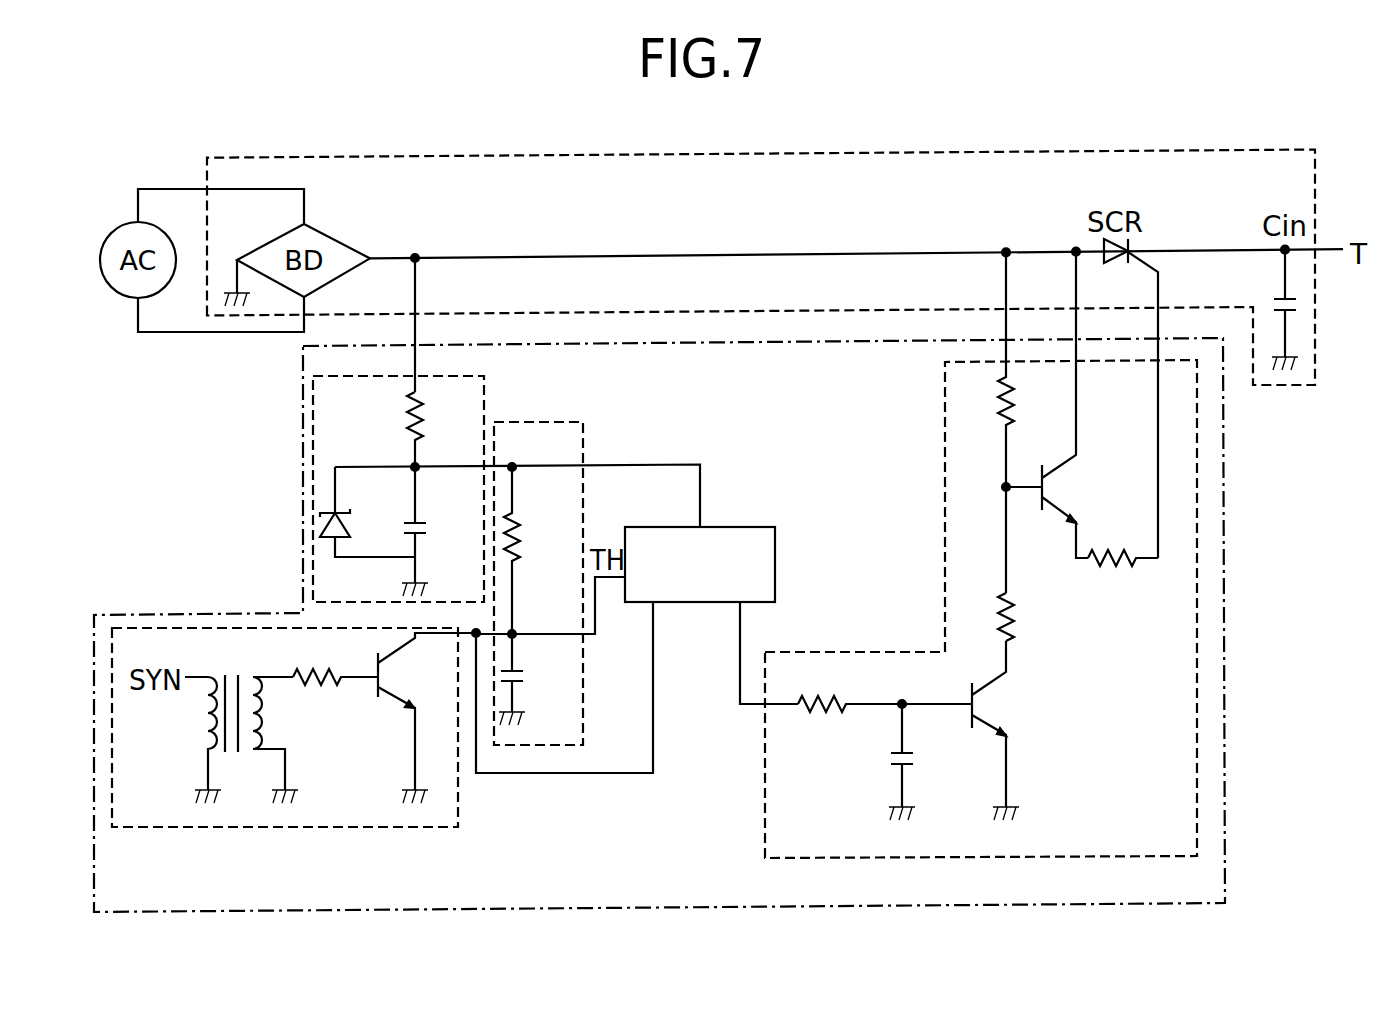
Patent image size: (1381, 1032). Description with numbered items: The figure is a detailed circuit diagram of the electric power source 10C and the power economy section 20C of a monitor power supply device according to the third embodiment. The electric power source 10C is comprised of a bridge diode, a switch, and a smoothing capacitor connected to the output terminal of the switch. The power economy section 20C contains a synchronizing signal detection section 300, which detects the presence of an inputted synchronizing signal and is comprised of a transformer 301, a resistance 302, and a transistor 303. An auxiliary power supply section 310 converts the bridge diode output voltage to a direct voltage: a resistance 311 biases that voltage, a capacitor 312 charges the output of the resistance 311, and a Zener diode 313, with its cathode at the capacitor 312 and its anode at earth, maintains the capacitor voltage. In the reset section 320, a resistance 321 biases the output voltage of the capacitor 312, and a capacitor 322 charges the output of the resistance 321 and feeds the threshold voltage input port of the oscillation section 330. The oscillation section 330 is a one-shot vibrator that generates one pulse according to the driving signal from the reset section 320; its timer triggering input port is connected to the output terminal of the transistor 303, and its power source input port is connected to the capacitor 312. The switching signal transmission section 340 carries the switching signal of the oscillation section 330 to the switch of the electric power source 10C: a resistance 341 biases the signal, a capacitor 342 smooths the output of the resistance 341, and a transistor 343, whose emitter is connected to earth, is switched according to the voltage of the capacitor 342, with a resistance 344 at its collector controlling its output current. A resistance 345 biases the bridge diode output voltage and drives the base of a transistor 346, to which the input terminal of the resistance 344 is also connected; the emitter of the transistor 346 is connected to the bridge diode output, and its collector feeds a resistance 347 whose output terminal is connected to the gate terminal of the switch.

The electric power source 10C is at (950, 152).
The power economy section 20C is at (1225, 667).
The synchronizing signal detection section 300 is at (435, 829).
The transformer 301 is at (241, 721).
The resistance 302 is at (335, 694).
The transistor 303 is at (427, 718).
The auxiliary power supply section 310 is at (485, 395).
The resistance 311 is at (384, 429).
The capacitor 312 is at (440, 531).
The Zener diode 313 is at (367, 512).
The reset section 320 is at (583, 442).
The resistance 321 is at (541, 550).
The capacitor 322 is at (538, 679).
The oscillation section 330 is at (663, 624).
The switching signal transmission section 340 is at (765, 802).
The resistance 341 is at (849, 726).
The capacitor 342 is at (932, 762).
The transistor 343 is at (978, 730).
The resistance 344 is at (1036, 617).
The resistance 345 is at (1033, 422).
The transistor 346 is at (1065, 405).
The resistance 347 is at (1123, 578).